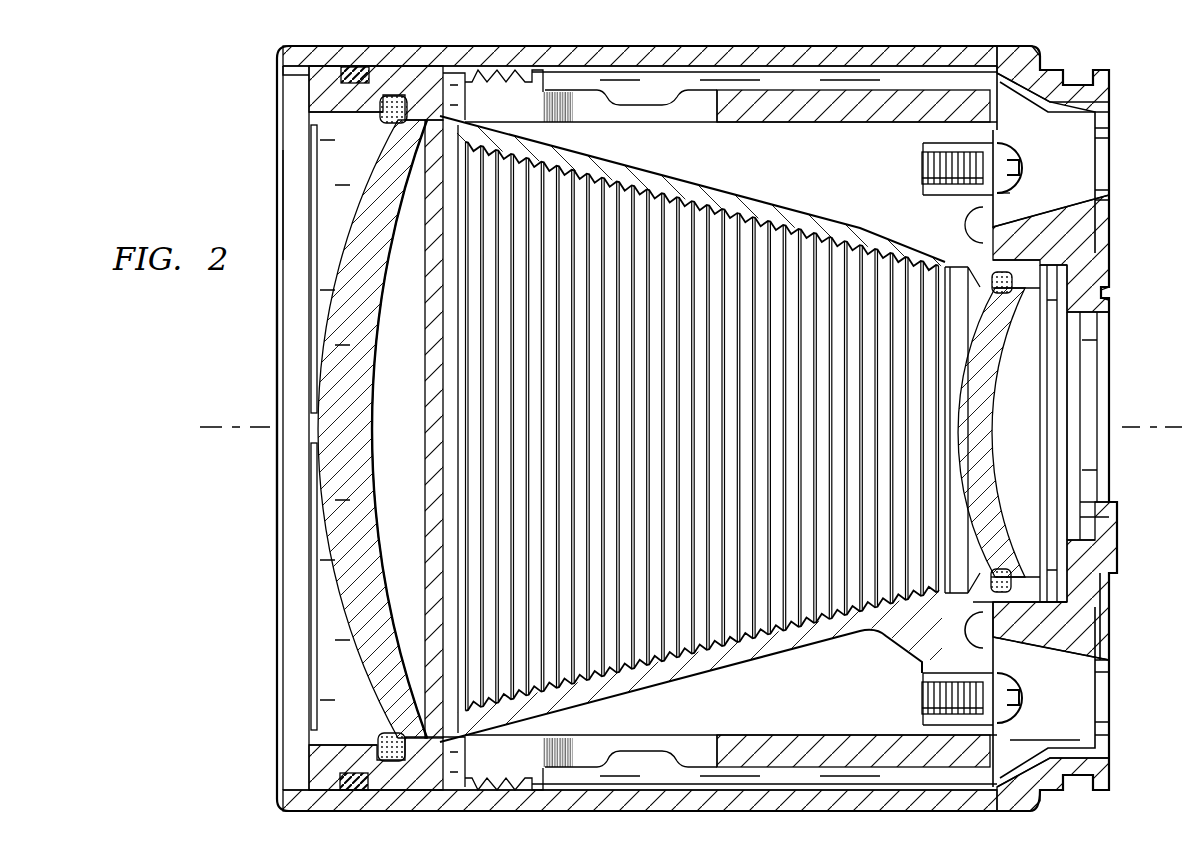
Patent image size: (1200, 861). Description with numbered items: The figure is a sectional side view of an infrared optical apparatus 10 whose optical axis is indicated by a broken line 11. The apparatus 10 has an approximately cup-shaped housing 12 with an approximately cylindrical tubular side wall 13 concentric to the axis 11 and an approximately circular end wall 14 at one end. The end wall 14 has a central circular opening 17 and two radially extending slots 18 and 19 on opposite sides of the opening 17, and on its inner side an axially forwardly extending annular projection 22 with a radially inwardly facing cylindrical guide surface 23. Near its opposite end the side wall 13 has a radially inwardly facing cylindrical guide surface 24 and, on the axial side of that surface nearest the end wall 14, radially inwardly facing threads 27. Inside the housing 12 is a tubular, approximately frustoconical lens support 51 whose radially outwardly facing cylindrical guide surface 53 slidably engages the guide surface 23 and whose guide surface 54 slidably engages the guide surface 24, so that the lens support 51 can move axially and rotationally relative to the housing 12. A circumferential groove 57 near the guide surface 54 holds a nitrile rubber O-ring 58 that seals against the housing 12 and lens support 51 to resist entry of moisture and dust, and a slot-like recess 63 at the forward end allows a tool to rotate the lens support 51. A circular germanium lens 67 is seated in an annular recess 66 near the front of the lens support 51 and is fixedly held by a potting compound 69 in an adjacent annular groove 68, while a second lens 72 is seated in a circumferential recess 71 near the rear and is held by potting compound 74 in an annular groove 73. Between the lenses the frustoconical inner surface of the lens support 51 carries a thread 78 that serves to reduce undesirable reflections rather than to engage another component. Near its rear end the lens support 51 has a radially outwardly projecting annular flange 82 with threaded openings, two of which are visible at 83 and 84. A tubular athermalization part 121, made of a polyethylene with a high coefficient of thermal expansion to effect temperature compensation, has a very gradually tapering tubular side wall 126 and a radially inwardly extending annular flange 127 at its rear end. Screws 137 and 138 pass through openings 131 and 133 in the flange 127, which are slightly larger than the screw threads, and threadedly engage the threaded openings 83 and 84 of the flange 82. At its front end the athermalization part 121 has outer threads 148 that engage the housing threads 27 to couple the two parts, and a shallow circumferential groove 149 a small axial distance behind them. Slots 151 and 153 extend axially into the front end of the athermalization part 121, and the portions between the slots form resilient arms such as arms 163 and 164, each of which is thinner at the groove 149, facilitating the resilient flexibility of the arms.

The optical apparatus 10 is at (246, 352).
The optical axis 11 is at (1170, 427).
The housing 12 is at (283, 133).
The tubular side wall 13 is at (718, 47).
The end wall 14 is at (1096, 332).
The circular opening 17 is at (1100, 362).
The radially extending slot 18 is at (1109, 142).
The radially extending slot 19 is at (1109, 730).
The annular projection 22 is at (1048, 708).
The cylindrical guide surface 23 is at (1065, 600).
The cylindrical guide surface 24 is at (300, 75).
The threads 27 is at (492, 120).
The lens support 51 is at (308, 205).
The cylindrical guide surface 53 is at (1048, 652).
The cylindrical guide surface 54 is at (328, 47).
The circumferential groove 57 is at (355, 790).
The O-ring 58 is at (355, 67).
The slot-like recess 63 is at (312, 427).
The annular recess 66 is at (397, 125).
The lens 67 is at (350, 630).
The annular groove 68 is at (398, 96).
The potting compound 69 is at (382, 114).
The circumferential recess 71 is at (1005, 340).
The second lens 72 is at (1040, 455).
The annular groove 73 is at (1005, 585).
The potting compound 74 is at (1008, 274).
The thread 78 is at (822, 243).
The annular flange 82 is at (917, 651).
The threaded opening 83 is at (922, 170).
The threaded opening 84 is at (922, 692).
The athermalization part 121 is at (775, 108).
The tubular side wall 126 is at (770, 745).
The annular flange 127 is at (1005, 200).
The opening 131 is at (1017, 150).
The opening 133 is at (1012, 708).
The screw 137 is at (922, 180).
The screw 138 is at (922, 705).
The threads 148 is at (500, 790).
The groove 149 is at (655, 100).
The slot 151 is at (712, 105).
The slot 153 is at (710, 738).
The resilient arm 163 is at (575, 768).
The resilient arm 164 is at (585, 89).